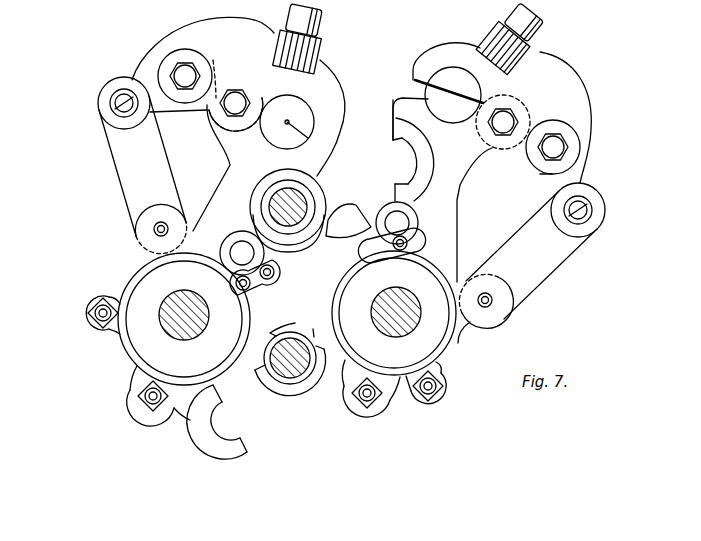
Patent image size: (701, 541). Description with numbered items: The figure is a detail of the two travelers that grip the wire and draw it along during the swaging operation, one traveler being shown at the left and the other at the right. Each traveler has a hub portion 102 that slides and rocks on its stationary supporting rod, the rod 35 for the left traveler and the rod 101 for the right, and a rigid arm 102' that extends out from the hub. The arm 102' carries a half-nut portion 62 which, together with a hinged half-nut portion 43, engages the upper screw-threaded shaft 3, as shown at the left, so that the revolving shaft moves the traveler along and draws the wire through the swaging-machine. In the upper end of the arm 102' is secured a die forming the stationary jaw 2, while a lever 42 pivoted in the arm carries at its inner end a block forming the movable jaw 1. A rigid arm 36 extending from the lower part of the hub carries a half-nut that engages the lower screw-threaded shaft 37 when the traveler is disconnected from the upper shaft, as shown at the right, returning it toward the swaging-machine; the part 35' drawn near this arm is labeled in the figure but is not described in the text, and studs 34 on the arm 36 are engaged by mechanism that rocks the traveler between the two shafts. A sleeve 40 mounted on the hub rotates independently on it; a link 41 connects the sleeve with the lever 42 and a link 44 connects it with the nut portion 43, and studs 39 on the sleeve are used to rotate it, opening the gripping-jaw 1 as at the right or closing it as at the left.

The movable jaw 1 is at (297, 113).
The stationary jaw 2 is at (292, 135).
The upper screw-threaded shaft 3 is at (328, 199).
The studs 34 is at (145, 402).
The stationary rod 35 is at (175, 321).
The guide segment 35' is at (246, 420).
The rigid arm 36 is at (192, 411).
The lower screw-threaded shaft 37 is at (292, 338).
The studs 39 is at (98, 318).
The sleeve 40 is at (248, 311).
The link 41 is at (124, 172).
The lever 42 is at (197, 36).
The half-nut portion 43 is at (300, 255).
The link 44 is at (271, 283).
The half-nut portion 62 is at (261, 201).
The stationary rod 101 is at (392, 337).
The hub portion 102 is at (309, 331).
The rigid arm 102' is at (335, 165).